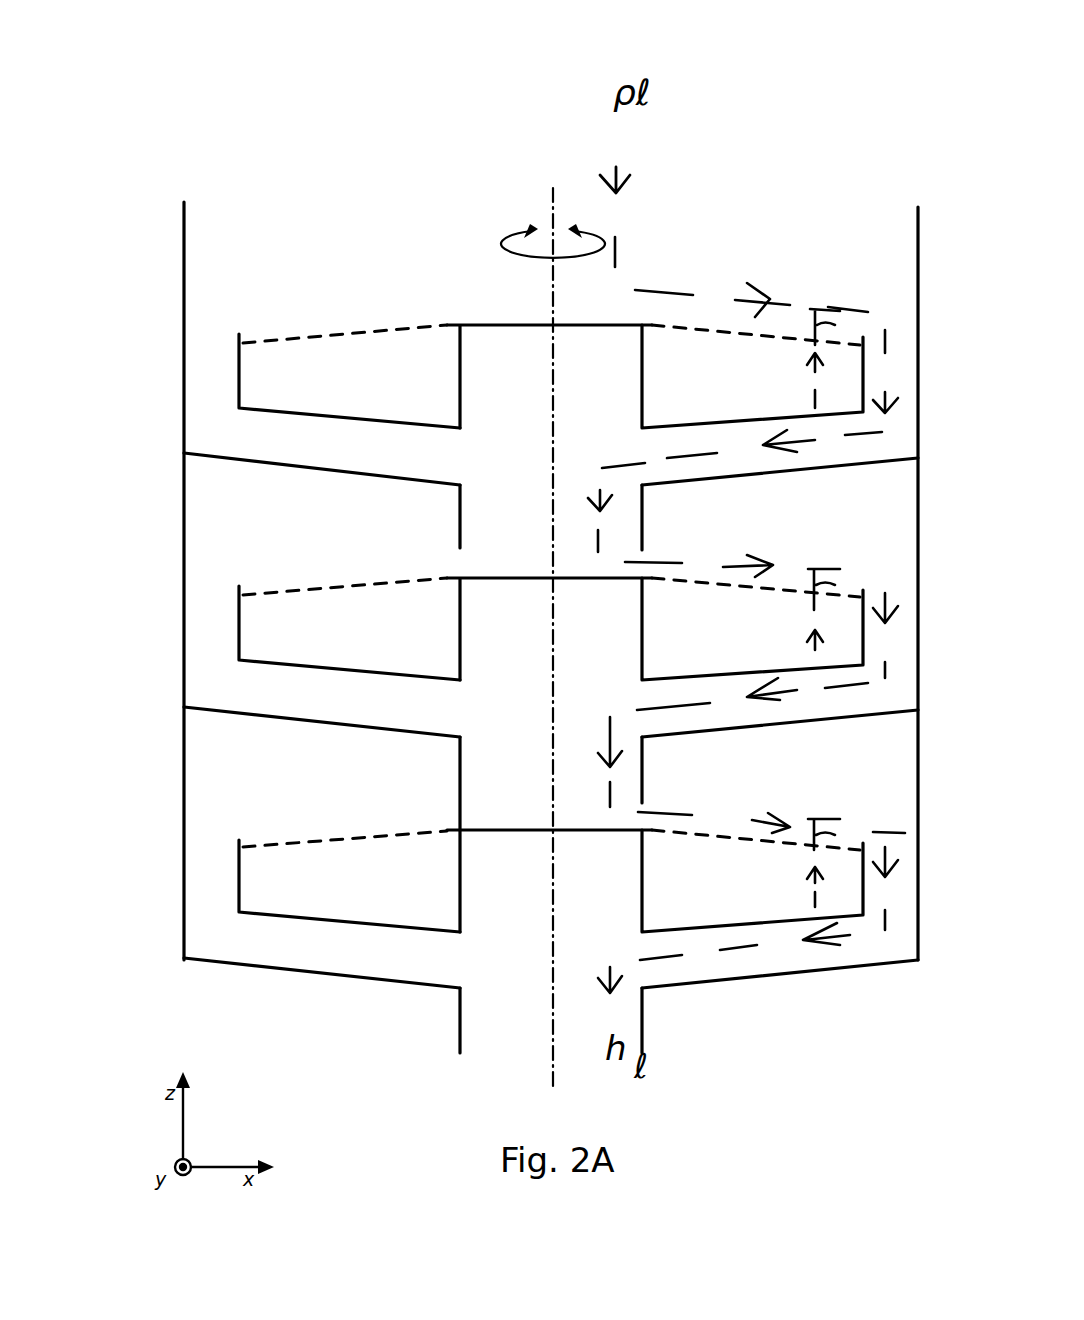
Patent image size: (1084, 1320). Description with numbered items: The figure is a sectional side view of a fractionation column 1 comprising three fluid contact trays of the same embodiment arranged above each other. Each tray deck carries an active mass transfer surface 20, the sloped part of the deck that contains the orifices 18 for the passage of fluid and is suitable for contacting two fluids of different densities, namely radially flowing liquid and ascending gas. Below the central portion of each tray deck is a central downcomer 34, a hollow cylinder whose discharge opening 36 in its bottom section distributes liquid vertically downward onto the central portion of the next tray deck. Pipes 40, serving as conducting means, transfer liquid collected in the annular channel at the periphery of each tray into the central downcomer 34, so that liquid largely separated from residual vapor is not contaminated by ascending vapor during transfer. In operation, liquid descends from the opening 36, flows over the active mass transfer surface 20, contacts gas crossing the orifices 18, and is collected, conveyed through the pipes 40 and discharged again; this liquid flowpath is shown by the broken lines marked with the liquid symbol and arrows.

The fractionation column 1 is at (757, 138).
The orifices 18 is at (285, 337).
The active mass transfer surface 20 is at (368, 295).
The central downcomer 34 is at (642, 517).
The discharge opening 36 is at (500, 788).
The pipes 40 is at (273, 440).